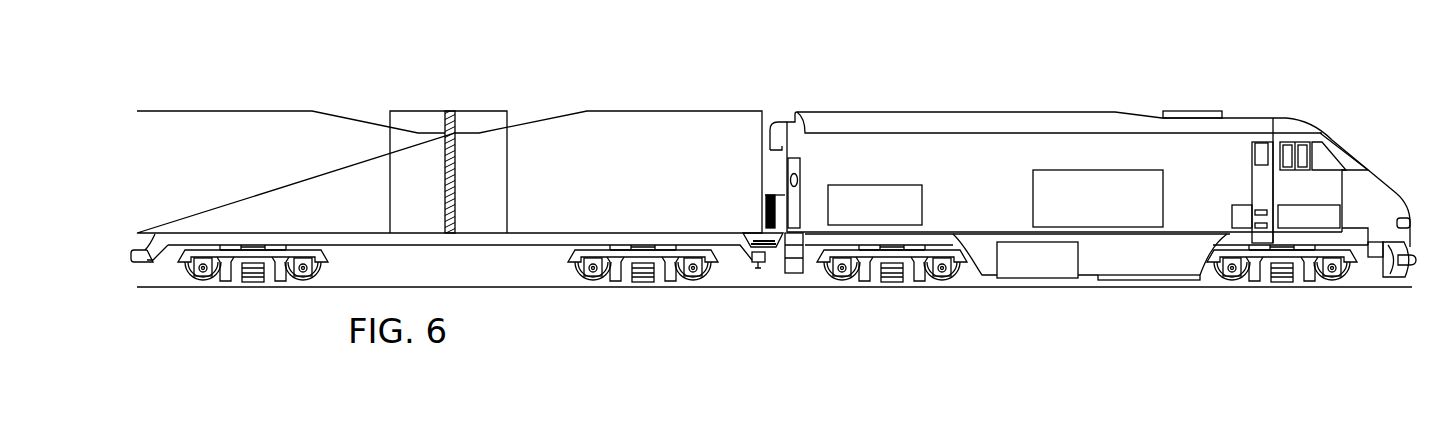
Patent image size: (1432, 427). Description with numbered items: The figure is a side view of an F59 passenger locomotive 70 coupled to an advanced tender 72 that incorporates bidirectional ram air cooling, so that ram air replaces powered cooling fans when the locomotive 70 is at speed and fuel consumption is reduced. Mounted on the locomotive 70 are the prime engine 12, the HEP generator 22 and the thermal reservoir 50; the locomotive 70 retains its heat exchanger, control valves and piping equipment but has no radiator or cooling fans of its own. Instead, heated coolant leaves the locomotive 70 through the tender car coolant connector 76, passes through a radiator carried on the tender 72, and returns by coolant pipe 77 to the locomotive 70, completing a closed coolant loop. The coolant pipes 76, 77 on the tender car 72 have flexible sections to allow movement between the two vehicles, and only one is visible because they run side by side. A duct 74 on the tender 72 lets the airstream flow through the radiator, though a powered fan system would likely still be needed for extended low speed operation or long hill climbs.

The prime engine 12 is at (1083, 202).
The HEP generator 22 is at (897, 210).
The thermal reservoir 50 is at (1028, 258).
The locomotive 70 is at (877, 93).
The tender 72 is at (700, 96).
The duct 74 is at (406, 120).
The tender car coolant connector 76 is at (783, 237).
The coolant pipe 77 is at (747, 237).